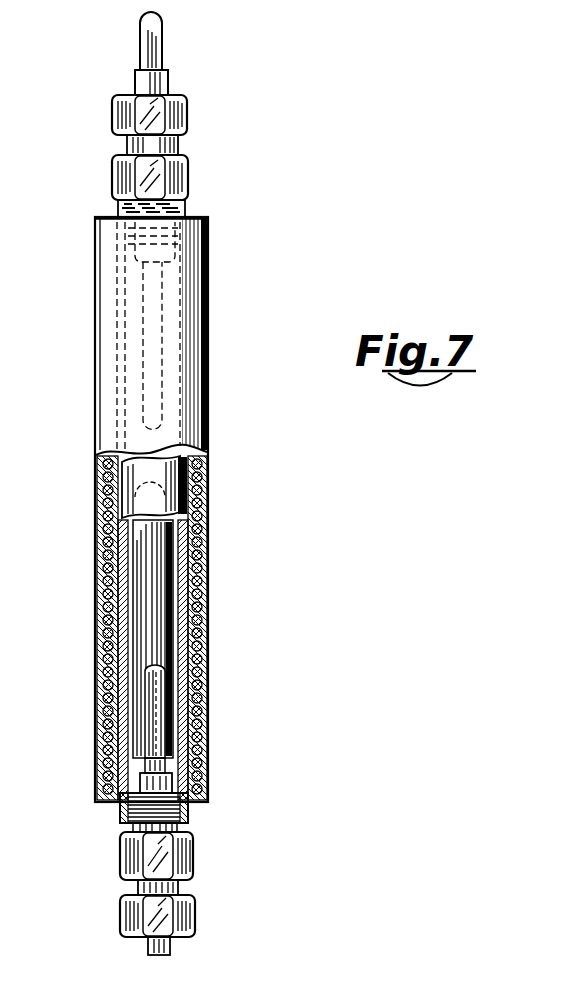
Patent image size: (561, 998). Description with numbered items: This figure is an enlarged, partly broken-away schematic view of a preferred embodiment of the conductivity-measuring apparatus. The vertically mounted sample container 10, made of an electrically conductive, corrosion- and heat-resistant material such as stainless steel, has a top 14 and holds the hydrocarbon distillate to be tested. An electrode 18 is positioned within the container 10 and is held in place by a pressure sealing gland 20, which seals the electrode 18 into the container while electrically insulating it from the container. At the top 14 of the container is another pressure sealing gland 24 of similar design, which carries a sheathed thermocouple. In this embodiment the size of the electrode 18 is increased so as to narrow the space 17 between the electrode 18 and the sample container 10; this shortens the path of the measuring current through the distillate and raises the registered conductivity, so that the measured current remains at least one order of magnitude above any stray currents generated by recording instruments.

The sample container 10 is at (208, 641).
The top 14 is at (187, 212).
The space 17 is at (174, 603).
The electrode 18 is at (168, 720).
The pressure sealing gland 20 is at (118, 912).
The pressure sealing gland 24 is at (192, 115).